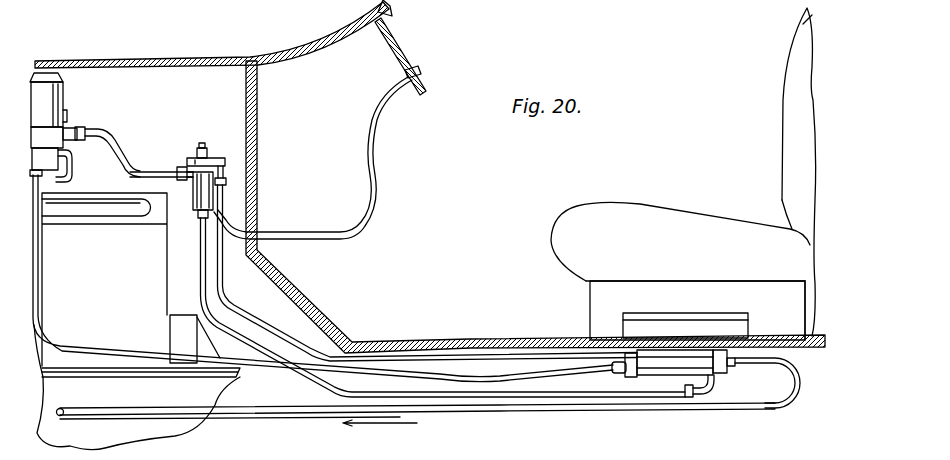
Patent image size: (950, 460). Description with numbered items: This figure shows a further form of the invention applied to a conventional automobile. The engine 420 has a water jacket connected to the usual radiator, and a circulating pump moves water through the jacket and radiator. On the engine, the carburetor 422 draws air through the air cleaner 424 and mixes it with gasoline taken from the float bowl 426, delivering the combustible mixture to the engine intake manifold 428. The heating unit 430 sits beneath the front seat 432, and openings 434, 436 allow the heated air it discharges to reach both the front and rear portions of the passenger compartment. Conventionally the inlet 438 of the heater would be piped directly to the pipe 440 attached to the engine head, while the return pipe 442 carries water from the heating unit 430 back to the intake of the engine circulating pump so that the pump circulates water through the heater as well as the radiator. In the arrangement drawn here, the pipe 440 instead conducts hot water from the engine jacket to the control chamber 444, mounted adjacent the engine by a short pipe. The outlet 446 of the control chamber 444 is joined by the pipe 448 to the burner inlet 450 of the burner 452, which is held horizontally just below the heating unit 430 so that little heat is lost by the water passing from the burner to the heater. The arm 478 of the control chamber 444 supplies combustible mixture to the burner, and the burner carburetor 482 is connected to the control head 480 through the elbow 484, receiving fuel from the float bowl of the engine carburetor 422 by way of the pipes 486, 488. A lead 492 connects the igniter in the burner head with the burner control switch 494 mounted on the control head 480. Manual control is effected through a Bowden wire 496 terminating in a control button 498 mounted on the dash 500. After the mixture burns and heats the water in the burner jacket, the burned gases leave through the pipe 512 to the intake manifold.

The engine 420 is at (105, 287).
The carburetor 422 is at (64, 116).
The air cleaner 424 is at (43, 97).
The float bowl 426 is at (58, 158).
The engine intake manifold 428 is at (92, 212).
The heating unit 430 is at (703, 322).
The front seat 432 is at (680, 183).
The opening 434 is at (590, 303).
The opening 436 is at (807, 306).
The inlet 438 is at (674, 298).
The pipe 440 is at (140, 170).
The return pipe 442 is at (503, 407).
The control chamber 444 is at (207, 197).
The outlet 446 is at (202, 220).
The pipe 448 is at (283, 312).
The burner inlet 450 is at (710, 368).
The burner 452 is at (713, 392).
The arm 478 is at (222, 161).
The control head 480 is at (207, 148).
The burner carburetor 482 is at (172, 185).
The elbow 484 is at (177, 167).
The pipe 486 is at (63, 181).
The pipe 488 is at (100, 130).
The lead 492 is at (616, 369).
The burner control switch 494 is at (207, 148).
The Bowden wire 496 is at (372, 203).
The control button 498 is at (420, 70).
The dash 500 is at (393, 45).
The pipe 512 is at (68, 338).